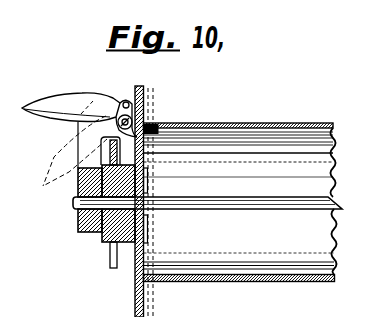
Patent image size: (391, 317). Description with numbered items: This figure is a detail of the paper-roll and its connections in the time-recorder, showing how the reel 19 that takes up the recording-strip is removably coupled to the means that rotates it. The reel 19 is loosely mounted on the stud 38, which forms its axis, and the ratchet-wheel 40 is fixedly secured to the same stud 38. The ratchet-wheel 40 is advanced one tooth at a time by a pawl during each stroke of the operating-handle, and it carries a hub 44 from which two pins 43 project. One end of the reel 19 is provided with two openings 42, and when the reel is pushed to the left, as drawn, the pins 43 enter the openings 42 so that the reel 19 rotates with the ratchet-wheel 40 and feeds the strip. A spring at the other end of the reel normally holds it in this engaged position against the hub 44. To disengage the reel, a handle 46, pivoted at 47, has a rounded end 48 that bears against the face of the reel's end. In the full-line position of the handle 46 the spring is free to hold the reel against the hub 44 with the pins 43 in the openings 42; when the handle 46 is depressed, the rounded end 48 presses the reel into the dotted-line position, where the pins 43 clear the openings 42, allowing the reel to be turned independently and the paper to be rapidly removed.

The reel 19 is at (258, 124).
The stud 38 is at (78, 204).
The ratchet-wheel 40 is at (111, 254).
The openings 42 is at (150, 173).
The pins 43 is at (148, 185).
The hub 44 is at (130, 243).
The handle 46 is at (54, 161).
The pivot 47 is at (124, 101).
The rounded end 48 is at (146, 129).